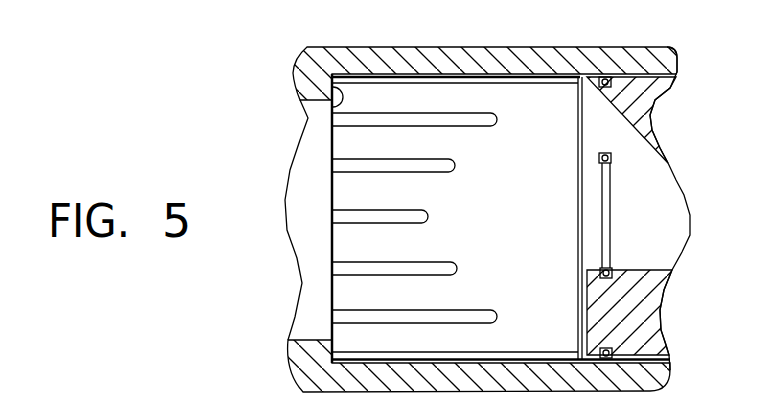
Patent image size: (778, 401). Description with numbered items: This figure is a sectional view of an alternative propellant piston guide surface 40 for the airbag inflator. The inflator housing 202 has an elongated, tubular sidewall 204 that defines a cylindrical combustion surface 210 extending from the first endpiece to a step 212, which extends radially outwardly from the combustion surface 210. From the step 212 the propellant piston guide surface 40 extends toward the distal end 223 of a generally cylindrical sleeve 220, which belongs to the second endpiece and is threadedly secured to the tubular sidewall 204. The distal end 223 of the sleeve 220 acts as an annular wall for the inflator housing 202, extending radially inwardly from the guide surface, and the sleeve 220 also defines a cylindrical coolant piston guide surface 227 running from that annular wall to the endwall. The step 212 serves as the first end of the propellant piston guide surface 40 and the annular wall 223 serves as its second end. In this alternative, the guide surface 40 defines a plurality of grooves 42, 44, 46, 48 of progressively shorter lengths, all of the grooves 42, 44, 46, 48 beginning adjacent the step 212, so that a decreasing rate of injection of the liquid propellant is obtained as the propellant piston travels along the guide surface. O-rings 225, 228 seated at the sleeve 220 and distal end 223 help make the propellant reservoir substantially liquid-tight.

The alternative propellant piston guide surface 40 is at (565, 83).
The groove 42 is at (457, 80).
The groove 44 is at (494, 125).
The groove 46 is at (454, 173).
The groove 48 is at (429, 224).
The inflator housing 202 is at (517, 45).
The tubular sidewall 204 is at (630, 46).
The combustion surface 210 is at (288, 340).
The step 212 is at (332, 104).
The sleeve 220 is at (652, 300).
The distal end (annular wall) 223 is at (580, 158).
The o-ring 225 is at (640, 370).
The coolant piston guide surface 227 is at (672, 266).
The o-ring 228 is at (612, 268).